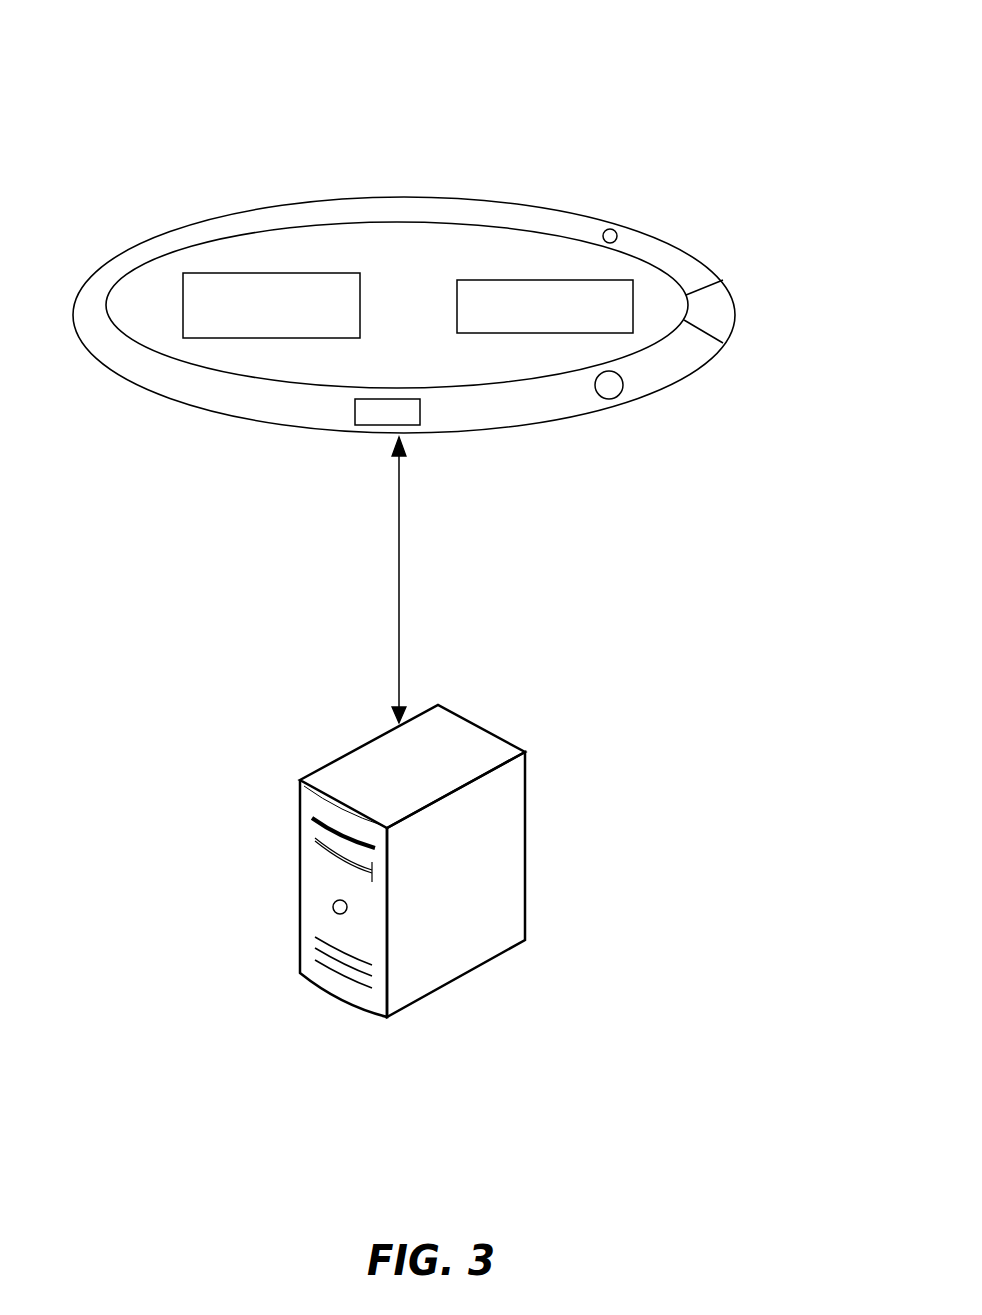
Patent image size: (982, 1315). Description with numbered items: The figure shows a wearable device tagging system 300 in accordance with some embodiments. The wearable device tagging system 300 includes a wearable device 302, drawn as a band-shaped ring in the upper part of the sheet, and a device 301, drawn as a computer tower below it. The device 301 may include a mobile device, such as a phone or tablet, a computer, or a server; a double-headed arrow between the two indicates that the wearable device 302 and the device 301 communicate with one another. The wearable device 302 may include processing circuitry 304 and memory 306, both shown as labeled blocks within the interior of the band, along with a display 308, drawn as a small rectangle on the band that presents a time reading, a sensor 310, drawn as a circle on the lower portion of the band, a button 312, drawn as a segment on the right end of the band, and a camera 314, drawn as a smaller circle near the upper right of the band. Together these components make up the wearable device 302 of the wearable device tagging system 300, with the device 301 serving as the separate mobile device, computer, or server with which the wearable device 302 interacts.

The wearable device tagging system 300 is at (722, 25).
The device 301 is at (493, 727).
The wearable device 302 is at (423, 198).
The processing circuitry 304 is at (322, 273).
The memory 306 is at (485, 333).
The display 308 is at (377, 427).
The sensor 310 is at (614, 397).
The button 312 is at (710, 298).
The camera 314 is at (616, 231).